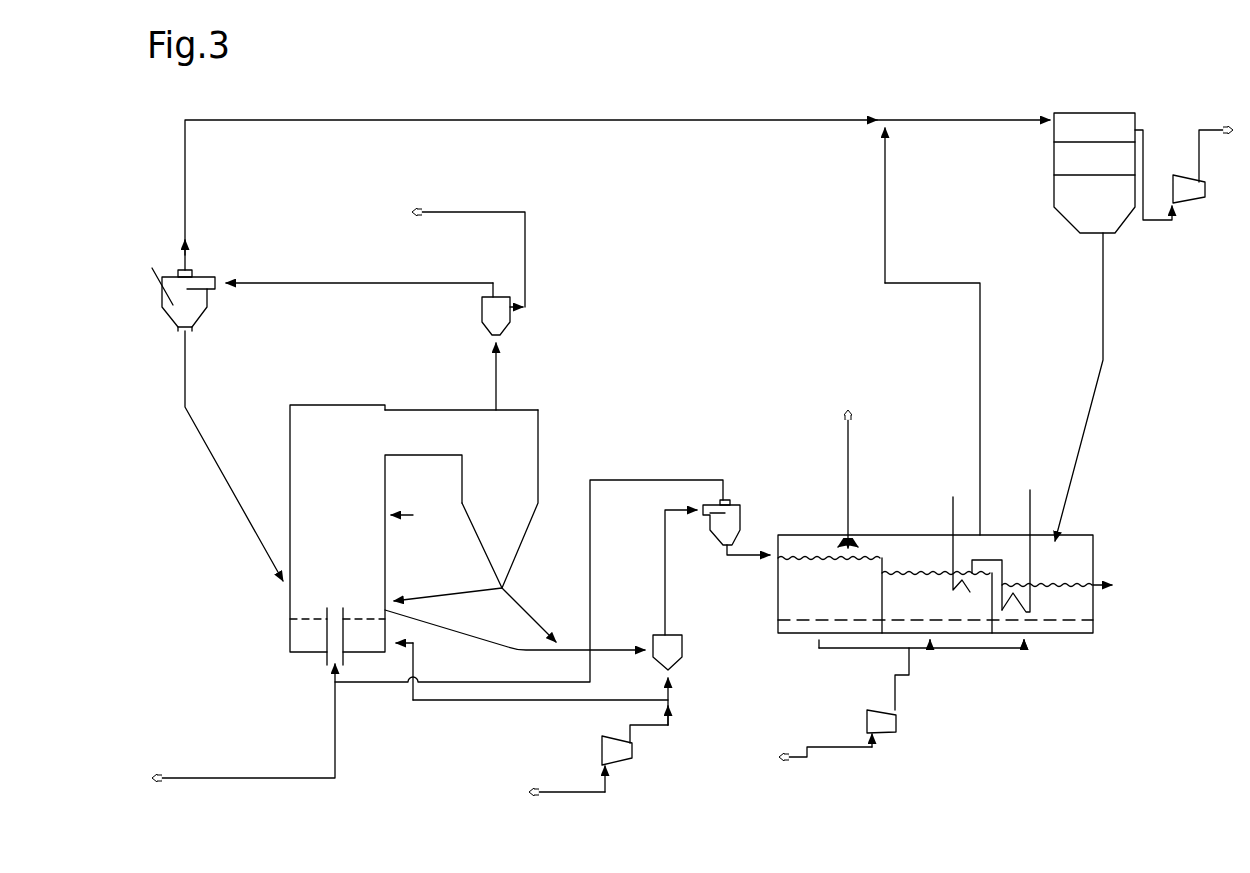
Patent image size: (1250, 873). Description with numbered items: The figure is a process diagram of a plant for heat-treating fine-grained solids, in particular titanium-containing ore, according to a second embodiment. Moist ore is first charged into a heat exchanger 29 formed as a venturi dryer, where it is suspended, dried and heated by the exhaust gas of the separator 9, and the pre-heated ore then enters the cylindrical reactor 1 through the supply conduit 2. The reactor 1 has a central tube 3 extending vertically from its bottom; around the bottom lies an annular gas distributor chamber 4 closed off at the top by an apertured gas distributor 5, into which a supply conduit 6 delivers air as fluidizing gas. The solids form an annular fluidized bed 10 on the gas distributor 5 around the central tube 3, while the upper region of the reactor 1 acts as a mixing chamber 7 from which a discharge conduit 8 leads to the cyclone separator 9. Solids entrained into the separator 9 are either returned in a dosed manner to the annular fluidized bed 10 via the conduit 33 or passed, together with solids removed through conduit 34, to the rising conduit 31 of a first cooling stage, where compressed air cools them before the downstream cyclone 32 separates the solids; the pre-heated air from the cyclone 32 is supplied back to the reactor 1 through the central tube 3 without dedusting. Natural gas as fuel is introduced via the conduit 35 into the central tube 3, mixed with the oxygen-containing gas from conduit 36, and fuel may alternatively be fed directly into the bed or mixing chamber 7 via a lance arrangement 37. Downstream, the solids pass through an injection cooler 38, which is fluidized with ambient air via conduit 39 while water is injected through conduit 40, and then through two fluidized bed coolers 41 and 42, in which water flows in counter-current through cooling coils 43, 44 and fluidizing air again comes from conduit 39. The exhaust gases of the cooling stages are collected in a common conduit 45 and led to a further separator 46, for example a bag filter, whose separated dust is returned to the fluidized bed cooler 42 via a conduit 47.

The reactor 1 is at (290, 428).
The supply conduit 2 is at (228, 480).
The central tube 3 is at (327, 636).
The gas distributor chamber 4 is at (298, 628).
The gas distributor 5 is at (303, 619).
The supply conduit 6 is at (463, 700).
The mixing chamber 7 is at (342, 494).
The discharge conduit 8 is at (409, 415).
The separator 9 is at (538, 410).
The annular fluidized bed 10 is at (378, 614).
The heat exchanger 29 is at (490, 312).
The rising conduit 31 is at (684, 652).
The cyclone 32 is at (738, 512).
The conduit 33 is at (440, 595).
The conduit 34 is at (459, 637).
The conduit 35 is at (228, 778).
The conduit 36 is at (700, 480).
The lance arrangement 37 is at (418, 508).
The injection cooler 38 is at (840, 616).
The conduit 39 is at (893, 702).
The conduit 40 is at (850, 446).
The fluidized bed cooler 41 is at (940, 616).
The fluidized bed cooler 42 is at (1070, 616).
The cooling coil 43 is at (1022, 612).
The cooling coil 44 is at (966, 590).
The common conduit 45 is at (985, 120).
The separator 46 is at (1059, 160).
The conduit 47 is at (1103, 285).